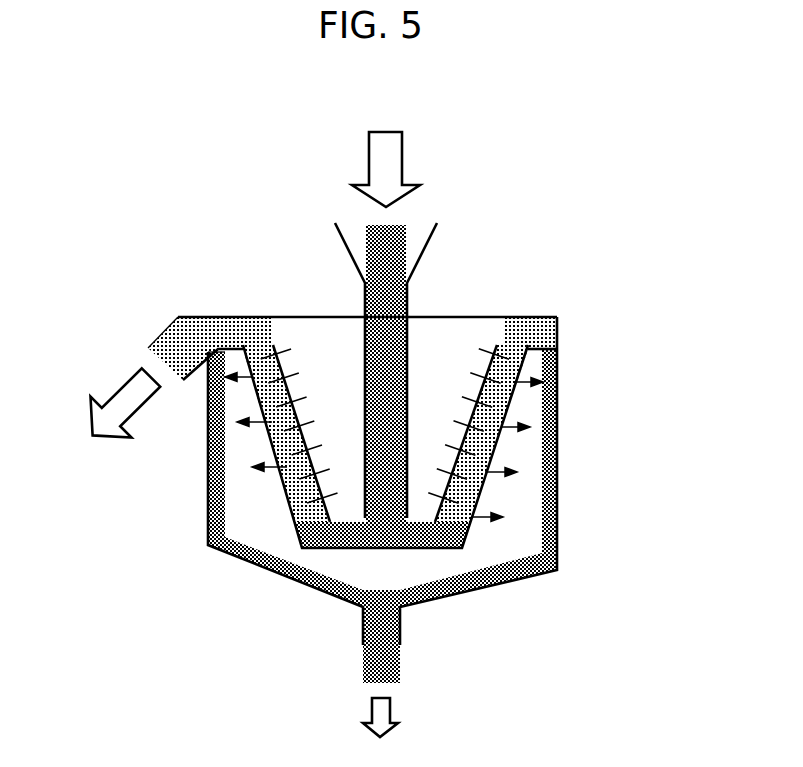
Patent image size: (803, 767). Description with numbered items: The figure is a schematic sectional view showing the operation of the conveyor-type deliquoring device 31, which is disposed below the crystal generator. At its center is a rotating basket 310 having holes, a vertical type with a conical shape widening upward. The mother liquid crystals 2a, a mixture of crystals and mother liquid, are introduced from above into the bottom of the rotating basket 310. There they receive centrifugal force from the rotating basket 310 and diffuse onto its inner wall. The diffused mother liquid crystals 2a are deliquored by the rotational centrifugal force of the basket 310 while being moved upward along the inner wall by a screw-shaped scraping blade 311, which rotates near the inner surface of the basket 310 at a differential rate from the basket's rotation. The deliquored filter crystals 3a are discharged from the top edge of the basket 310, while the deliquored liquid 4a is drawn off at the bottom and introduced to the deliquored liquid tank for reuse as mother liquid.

The conveyor-type deliquoring device 31 is at (545, 174).
The mother liquid crystals 2a is at (378, 232).
The deliquored filter crystals 3a is at (127, 393).
The deliquored liquid 4a is at (275, 515).
The basket 310 is at (447, 432).
The screw-shaped scraping blade 311 is at (468, 445).